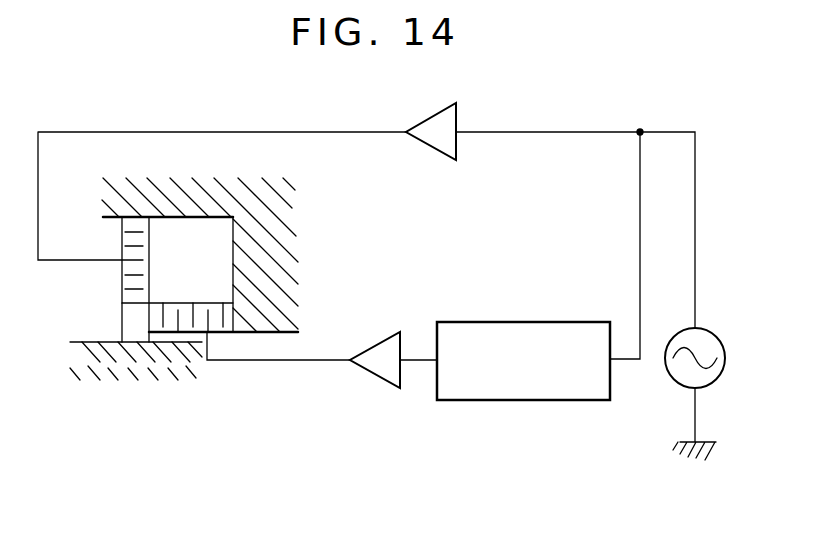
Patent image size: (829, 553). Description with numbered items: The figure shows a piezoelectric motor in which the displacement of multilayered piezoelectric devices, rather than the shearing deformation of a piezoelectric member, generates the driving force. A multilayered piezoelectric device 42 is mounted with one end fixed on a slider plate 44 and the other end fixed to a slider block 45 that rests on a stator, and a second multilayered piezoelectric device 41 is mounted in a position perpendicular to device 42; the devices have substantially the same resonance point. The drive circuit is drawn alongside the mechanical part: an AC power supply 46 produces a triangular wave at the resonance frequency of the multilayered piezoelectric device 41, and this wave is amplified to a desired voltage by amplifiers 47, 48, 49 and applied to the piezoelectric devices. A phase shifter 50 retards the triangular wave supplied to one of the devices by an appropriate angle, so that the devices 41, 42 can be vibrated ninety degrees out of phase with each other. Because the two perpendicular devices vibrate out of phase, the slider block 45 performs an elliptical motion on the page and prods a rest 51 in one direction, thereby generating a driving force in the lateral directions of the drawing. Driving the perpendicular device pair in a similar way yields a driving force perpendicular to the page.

The multilayered piezoelectric device 41 is at (121, 288).
The multilayered piezoelectric device 42 is at (183, 332).
The slider plate 44 is at (268, 231).
The slider block 45 is at (122, 322).
The AC power supply 46 is at (686, 390).
The amplifier 47 is at (456, 121).
The amplifier 48 is at (350, 380).
The amplifier 49 is at (372, 374).
The phase shifter 50 is at (515, 400).
The rest 51 is at (130, 362).